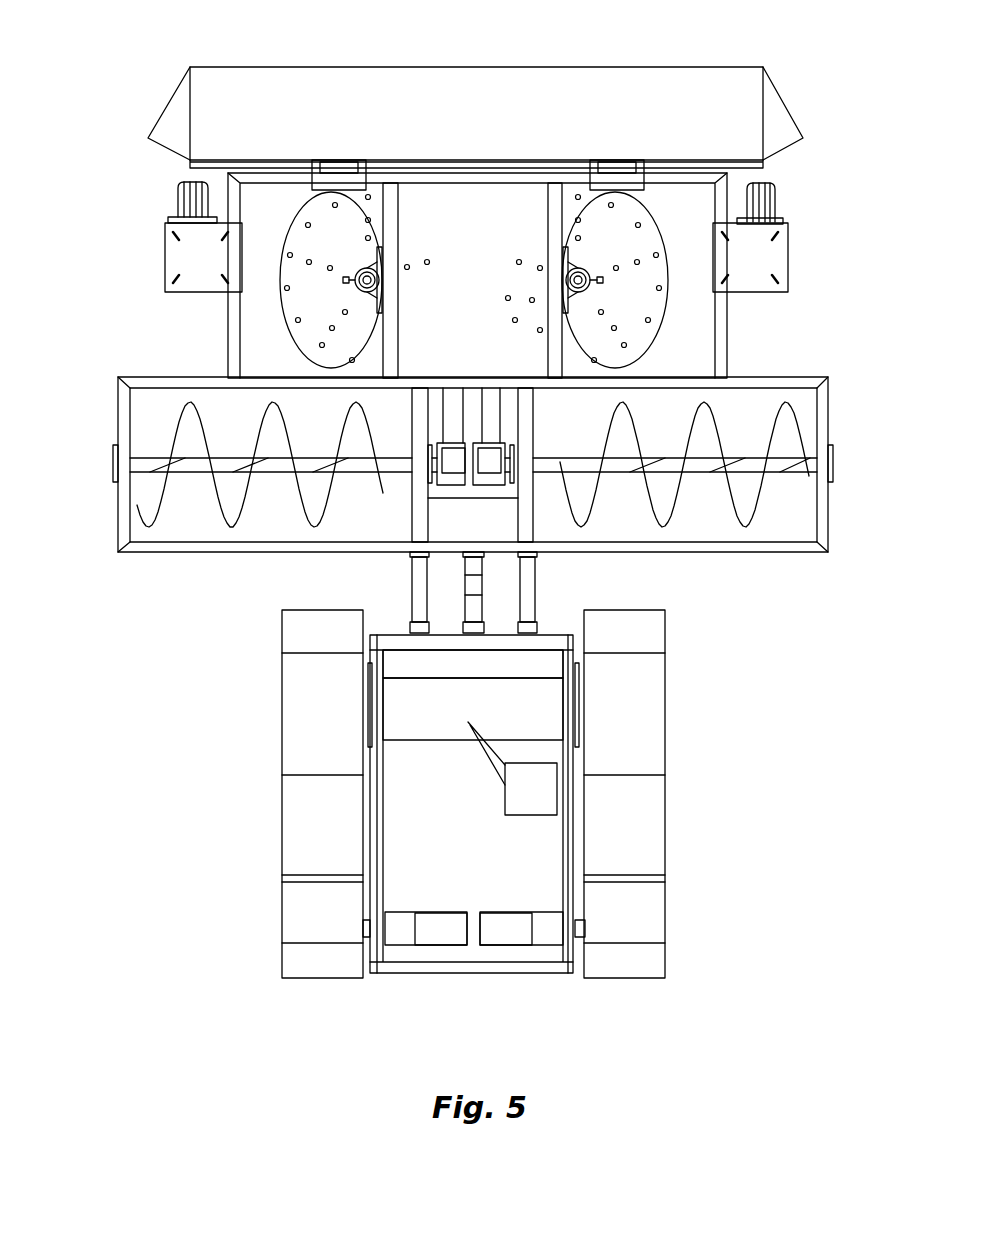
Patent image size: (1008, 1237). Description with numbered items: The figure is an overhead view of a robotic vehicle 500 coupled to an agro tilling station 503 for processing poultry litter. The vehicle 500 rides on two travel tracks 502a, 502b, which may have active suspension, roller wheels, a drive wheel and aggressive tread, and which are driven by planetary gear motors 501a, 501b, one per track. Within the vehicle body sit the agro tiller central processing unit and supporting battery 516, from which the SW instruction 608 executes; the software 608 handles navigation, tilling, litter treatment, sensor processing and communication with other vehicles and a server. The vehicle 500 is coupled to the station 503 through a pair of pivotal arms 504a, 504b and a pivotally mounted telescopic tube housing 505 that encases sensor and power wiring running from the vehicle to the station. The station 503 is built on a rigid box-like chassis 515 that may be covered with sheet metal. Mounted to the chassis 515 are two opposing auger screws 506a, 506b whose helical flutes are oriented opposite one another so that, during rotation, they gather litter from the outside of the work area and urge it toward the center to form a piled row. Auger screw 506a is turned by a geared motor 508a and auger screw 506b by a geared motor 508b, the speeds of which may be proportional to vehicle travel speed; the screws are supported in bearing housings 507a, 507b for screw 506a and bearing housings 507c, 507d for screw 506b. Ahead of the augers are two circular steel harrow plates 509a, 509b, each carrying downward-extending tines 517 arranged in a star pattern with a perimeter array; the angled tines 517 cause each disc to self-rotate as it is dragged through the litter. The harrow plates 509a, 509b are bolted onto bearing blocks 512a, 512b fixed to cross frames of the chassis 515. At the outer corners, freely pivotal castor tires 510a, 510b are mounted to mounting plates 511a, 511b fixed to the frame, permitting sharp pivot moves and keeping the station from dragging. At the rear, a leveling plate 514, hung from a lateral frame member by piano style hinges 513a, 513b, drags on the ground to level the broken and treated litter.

The robotic vehicle 500 is at (738, 748).
The planetary gear motor 501a is at (450, 945).
The planetary gear motor 501b is at (493, 945).
The travel track 502a is at (282, 855).
The travel track 502b is at (665, 855).
The agro tilling station 503 is at (243, 604).
The pivotal arm 504a is at (408, 608).
The pivotal arm 504b is at (537, 608).
The telescopic tube housing 505 is at (475, 610).
The auger screw 506a is at (227, 453).
The auger screw 506b is at (733, 453).
The bearing housing 507a is at (118, 462).
The bearing housing 507b is at (427, 483).
The bearing housing 507c is at (833, 462).
The bearing housing 507d is at (518, 482).
The geared motor 508a is at (448, 485).
The geared motor 508b is at (488, 450).
The harrow plate 509a is at (290, 233).
The harrow plate 509b is at (680, 212).
The tire 510a is at (178, 197).
The tire 510b is at (778, 197).
The mounting plate 511a is at (165, 255).
The mounting plate 511b is at (788, 255).
The bearing block 512a is at (345, 282).
The bearing block 512b is at (600, 282).
The hinge 513a is at (340, 165).
The hinge 513b is at (605, 163).
The rear leveling plate 514 is at (450, 66).
The chassis 515 is at (193, 553).
The agro tiller central processing unit and battery 516 is at (455, 752).
The tines 517 is at (540, 268).
The SW instruction 608 is at (533, 815).